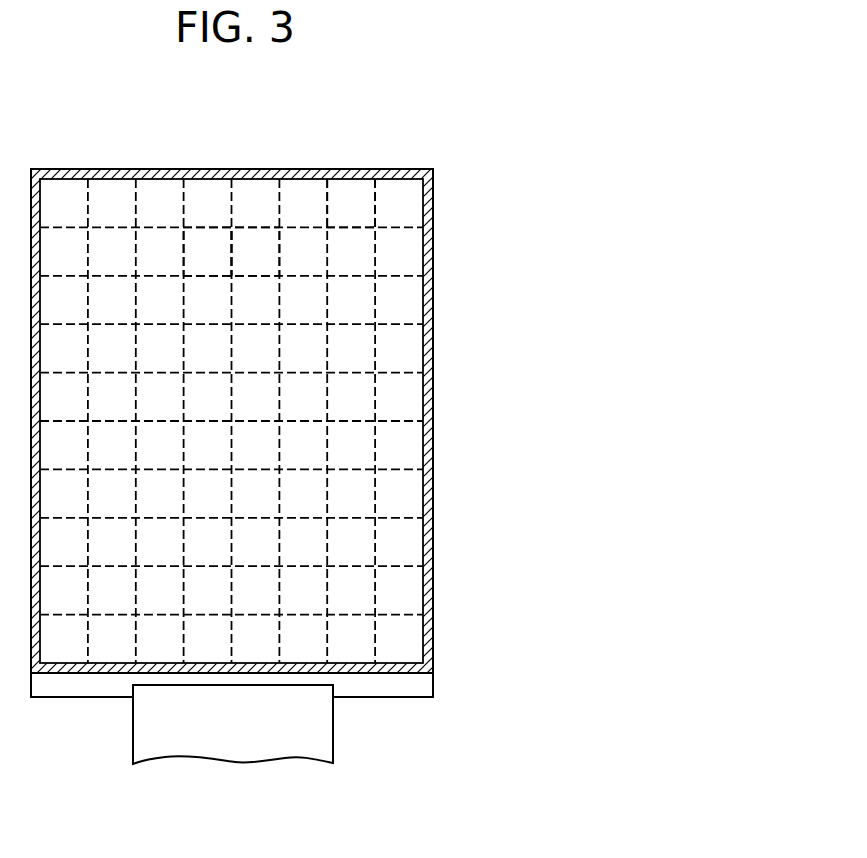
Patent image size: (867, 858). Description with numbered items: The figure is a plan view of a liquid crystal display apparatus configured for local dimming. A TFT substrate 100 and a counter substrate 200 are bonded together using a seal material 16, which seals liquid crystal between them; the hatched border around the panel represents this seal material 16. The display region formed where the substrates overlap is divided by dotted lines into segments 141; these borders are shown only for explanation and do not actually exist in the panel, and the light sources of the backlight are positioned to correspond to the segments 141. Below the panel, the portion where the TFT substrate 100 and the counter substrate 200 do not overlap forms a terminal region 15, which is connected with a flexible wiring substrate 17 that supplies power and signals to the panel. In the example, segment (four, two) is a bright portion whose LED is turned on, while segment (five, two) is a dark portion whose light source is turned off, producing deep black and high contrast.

The seal material 16 is at (427, 357).
The counter substrate 200 is at (432, 583).
The TFT substrate 100 is at (435, 680).
The terminal region 15 is at (385, 690).
The flexible wiring substrate 17 is at (131, 735).
The segment 141 is at (350, 200).